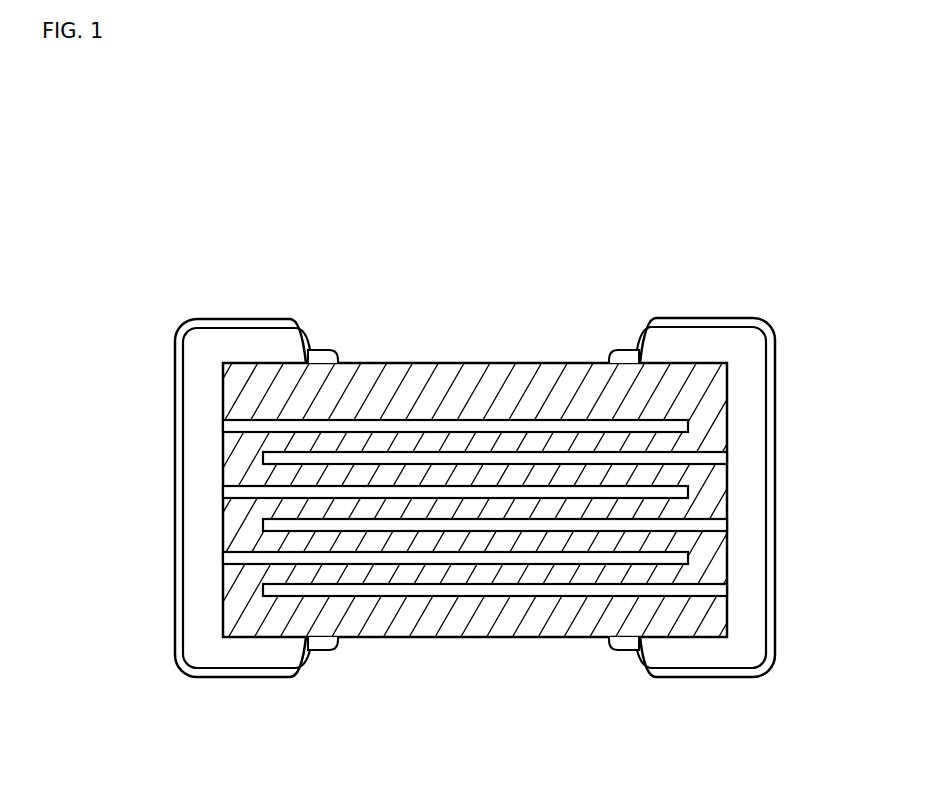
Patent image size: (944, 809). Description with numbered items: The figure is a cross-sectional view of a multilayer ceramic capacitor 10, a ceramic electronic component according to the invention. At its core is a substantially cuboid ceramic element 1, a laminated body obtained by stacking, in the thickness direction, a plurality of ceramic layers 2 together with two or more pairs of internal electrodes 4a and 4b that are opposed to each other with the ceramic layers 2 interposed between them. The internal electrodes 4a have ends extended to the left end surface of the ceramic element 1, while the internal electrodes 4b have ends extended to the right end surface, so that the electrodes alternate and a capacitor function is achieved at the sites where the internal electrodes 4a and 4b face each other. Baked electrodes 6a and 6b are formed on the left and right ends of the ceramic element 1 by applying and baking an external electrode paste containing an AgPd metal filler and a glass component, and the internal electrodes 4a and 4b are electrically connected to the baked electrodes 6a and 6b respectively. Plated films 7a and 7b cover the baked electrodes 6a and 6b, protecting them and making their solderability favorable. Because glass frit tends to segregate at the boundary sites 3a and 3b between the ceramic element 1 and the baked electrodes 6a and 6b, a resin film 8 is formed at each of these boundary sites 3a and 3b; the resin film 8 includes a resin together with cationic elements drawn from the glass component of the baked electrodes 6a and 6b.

The multilayer ceramic capacitor 10 is at (244, 183).
The ceramic element 1 is at (488, 459).
The ceramic layer 2 is at (277, 395).
The boundary site 3a is at (204, 501).
The boundary site 3b is at (737, 489).
The internal electrode 4a is at (590, 555).
The internal electrode 4b is at (512, 457).
The baked electrode 6a is at (198, 362).
The baked electrode 6b is at (750, 360).
The plated film 7a is at (185, 325).
The plated film 7b is at (764, 320).
The resin film 8 is at (328, 350).